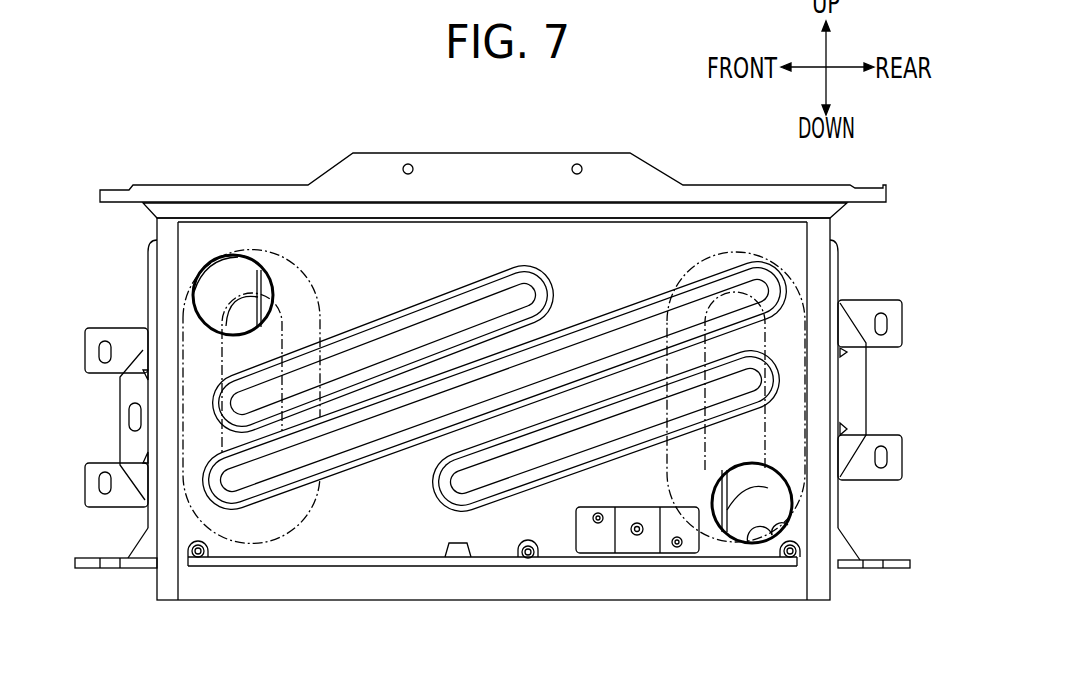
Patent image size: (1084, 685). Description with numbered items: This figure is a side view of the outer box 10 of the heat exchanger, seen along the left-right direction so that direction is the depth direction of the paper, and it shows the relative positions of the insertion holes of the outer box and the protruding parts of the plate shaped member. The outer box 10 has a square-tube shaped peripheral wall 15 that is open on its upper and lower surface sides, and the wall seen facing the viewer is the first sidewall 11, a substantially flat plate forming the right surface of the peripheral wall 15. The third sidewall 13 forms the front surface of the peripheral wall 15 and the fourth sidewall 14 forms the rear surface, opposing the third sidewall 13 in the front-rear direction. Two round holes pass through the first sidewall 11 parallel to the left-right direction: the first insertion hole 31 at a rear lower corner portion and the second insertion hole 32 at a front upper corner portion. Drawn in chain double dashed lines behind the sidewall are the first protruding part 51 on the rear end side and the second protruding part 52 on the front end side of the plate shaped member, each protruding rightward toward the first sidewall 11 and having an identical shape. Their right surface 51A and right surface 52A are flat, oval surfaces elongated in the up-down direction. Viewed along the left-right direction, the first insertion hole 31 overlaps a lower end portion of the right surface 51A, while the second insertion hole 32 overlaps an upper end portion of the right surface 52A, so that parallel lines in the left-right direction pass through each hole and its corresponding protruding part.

The outer box 10 is at (160, 164).
The first sidewall 11 is at (370, 520).
The third sidewall 13 is at (154, 237).
The fourth sidewall 14 is at (832, 230).
The peripheral wall 15 is at (140, 267).
The first insertion hole 31 is at (763, 548).
The second insertion hole 32 is at (233, 258).
The first protruding part 51 is at (787, 435).
The right surface of the first protruding part 51A is at (742, 485).
The second protruding part 52 is at (203, 385).
The right surface of the second protruding part 52A is at (247, 315).